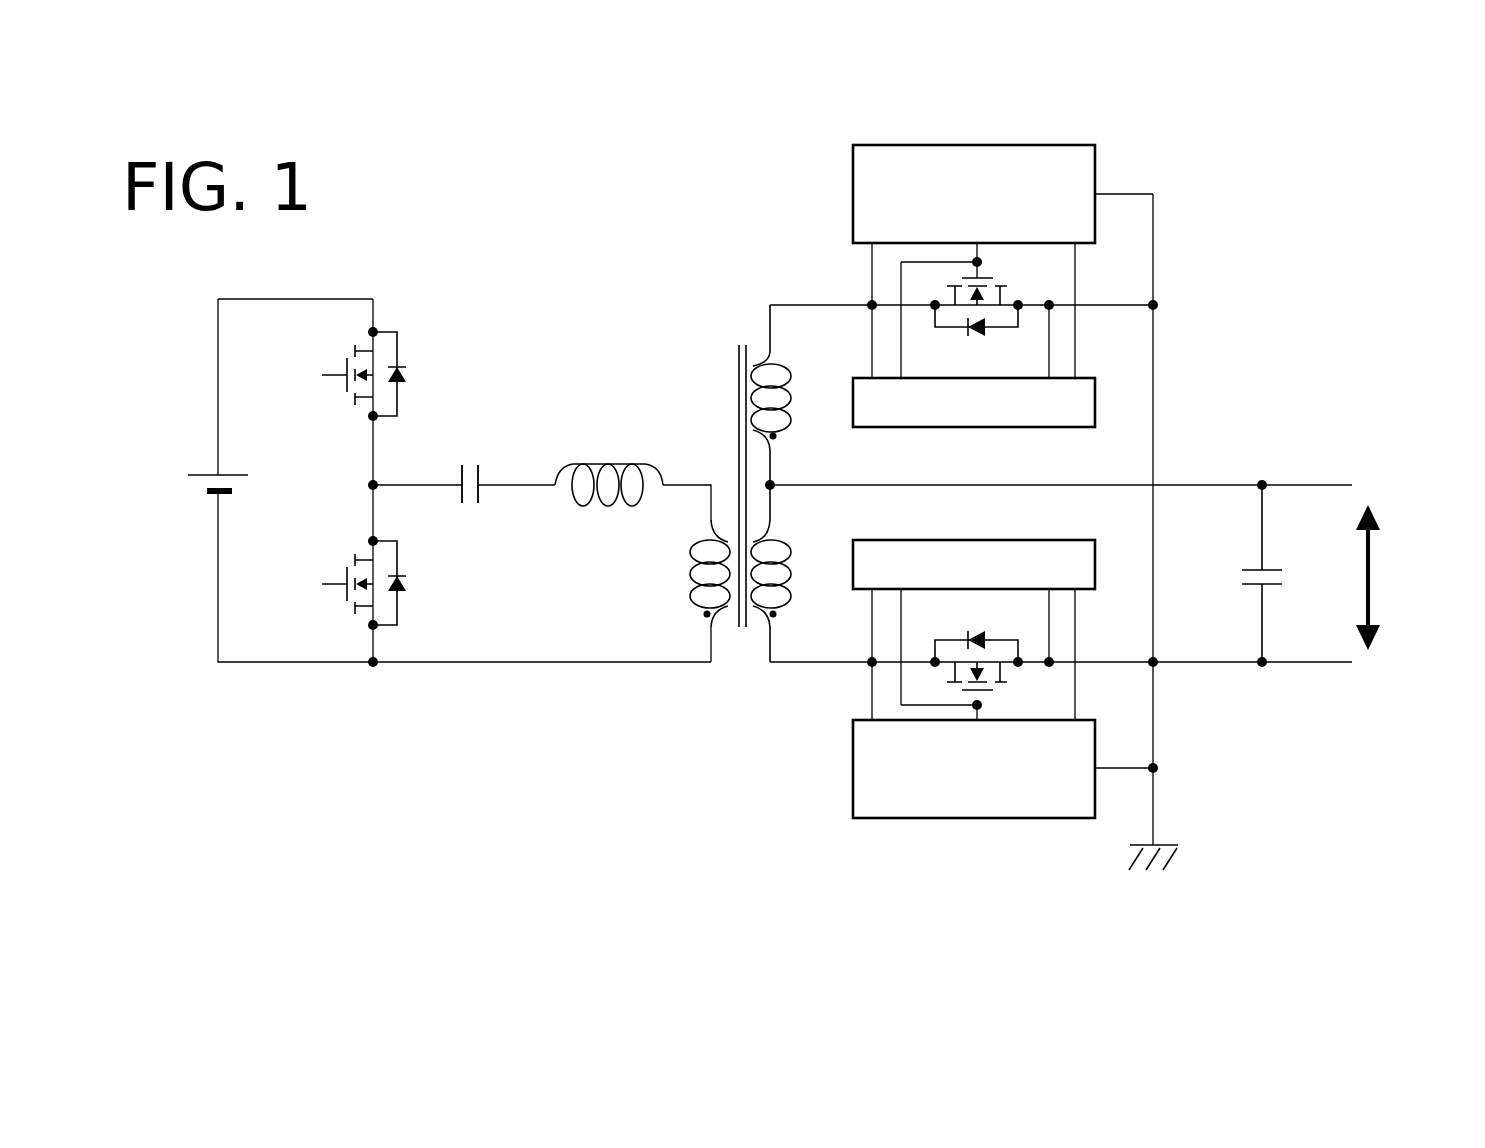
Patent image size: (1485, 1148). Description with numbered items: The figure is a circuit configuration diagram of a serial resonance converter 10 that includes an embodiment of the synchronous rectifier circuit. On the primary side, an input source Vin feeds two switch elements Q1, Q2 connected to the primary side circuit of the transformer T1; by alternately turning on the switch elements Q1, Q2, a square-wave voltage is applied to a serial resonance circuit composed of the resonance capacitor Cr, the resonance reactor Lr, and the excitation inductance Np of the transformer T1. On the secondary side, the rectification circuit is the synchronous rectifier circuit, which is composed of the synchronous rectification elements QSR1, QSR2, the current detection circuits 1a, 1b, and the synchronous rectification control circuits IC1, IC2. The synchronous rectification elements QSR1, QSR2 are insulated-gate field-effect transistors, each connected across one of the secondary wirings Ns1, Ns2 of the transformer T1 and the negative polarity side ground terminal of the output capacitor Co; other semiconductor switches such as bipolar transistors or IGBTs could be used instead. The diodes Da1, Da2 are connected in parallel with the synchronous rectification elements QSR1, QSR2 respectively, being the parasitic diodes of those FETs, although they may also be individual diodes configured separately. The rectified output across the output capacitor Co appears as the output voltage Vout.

The switching power supply device 10 is at (576, 209).
The input voltage source Vin is at (194, 490).
The switch element Q1 is at (355, 374).
The switch element Q2 is at (355, 583).
The resonance capacitor Cr is at (461, 465).
The resonance reactor Lr is at (609, 466).
The transformer T1 is at (741, 494).
The excitation inductance Np is at (687, 573).
The secondary wiring Ns1 is at (794, 395).
The secondary wiring Ns2 is at (794, 573).
The synchronous rectification control circuit IC1 is at (1097, 166).
The synchronous rectification control circuit IC2 is at (851, 740).
The synchronous rectification element QSR1 is at (966, 314).
The synchronous rectification element QSR2 is at (964, 656).
The diode Da1 is at (968, 333).
The diode Da2 is at (968, 636).
The current detection circuit 1a is at (1045, 428).
The current detection circuit 1b is at (1040, 540).
The output capacitor Co is at (1273, 573).
The output voltage Vout is at (1402, 577).